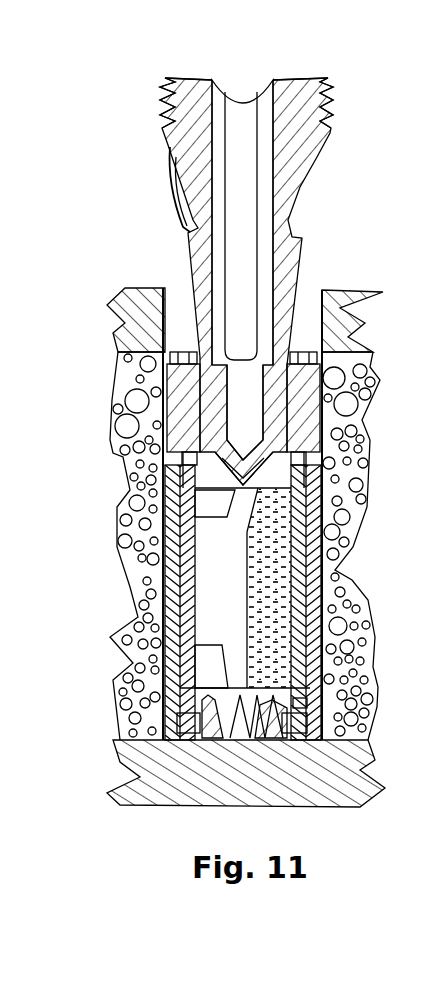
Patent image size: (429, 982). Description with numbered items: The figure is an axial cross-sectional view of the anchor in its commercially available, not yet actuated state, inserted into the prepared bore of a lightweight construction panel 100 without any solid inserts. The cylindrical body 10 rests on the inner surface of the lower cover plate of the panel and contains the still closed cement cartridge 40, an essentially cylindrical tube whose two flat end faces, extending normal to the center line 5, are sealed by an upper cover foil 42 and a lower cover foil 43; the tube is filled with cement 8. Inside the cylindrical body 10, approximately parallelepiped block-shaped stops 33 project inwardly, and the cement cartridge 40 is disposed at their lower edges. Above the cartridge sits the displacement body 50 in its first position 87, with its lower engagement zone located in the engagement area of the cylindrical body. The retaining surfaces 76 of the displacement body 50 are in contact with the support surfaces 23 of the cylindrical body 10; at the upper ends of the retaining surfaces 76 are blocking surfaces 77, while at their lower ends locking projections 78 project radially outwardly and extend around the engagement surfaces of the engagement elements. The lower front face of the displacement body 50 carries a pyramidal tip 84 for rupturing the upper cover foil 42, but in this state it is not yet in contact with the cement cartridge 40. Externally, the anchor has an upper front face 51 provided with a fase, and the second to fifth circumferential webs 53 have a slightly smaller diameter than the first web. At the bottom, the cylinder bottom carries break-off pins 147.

The center line 5 is at (243, 760).
The cement 8 is at (262, 615).
The cylindrical body 10 is at (260, 487).
The support surfaces 23 is at (247, 393).
The stops 33 is at (240, 475).
The cement cartridge 40 is at (163, 598).
The upper cover foil 42 is at (247, 532).
The lower cover foil 43 is at (222, 645).
The displacement body 50 is at (165, 185).
The upper front face 51 is at (190, 78).
The circumferential webs 53 is at (170, 107).
The retaining surfaces 76 is at (215, 400).
The blocking surfaces 77 is at (205, 362).
The locking projections 78 is at (205, 450).
The pyramidal tip 84 is at (258, 488).
The first position 87 is at (135, 138).
The lightweight construction panel 100 is at (118, 284).
The break-off pins 147 is at (185, 702).